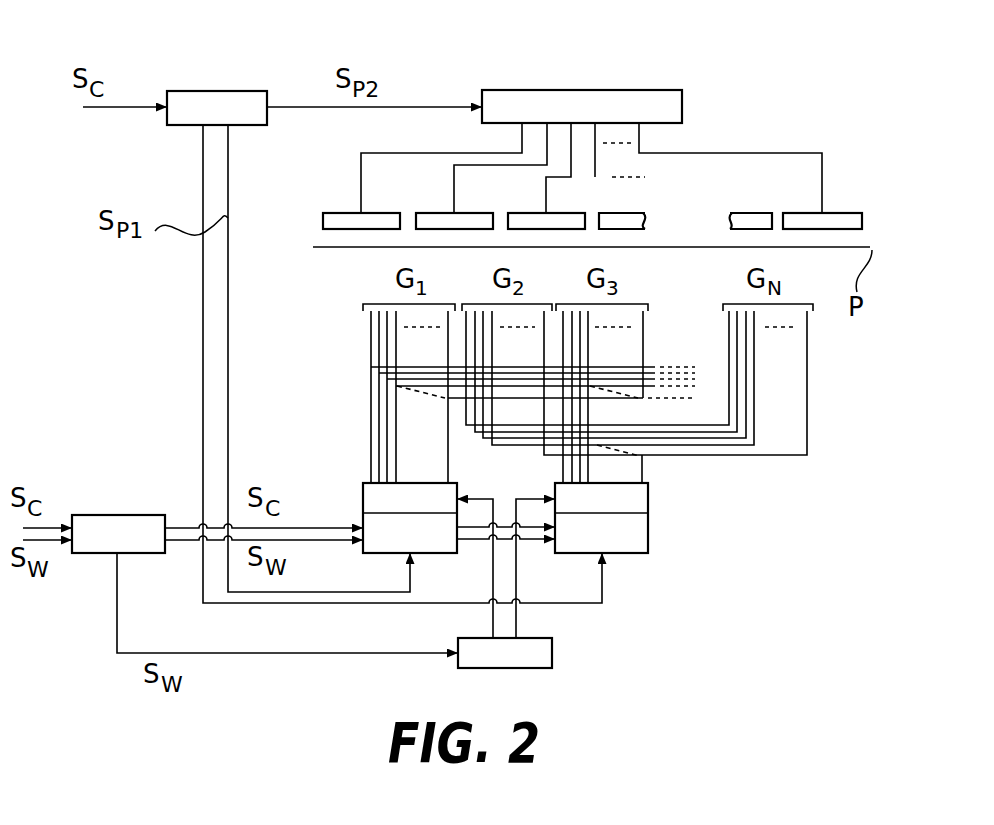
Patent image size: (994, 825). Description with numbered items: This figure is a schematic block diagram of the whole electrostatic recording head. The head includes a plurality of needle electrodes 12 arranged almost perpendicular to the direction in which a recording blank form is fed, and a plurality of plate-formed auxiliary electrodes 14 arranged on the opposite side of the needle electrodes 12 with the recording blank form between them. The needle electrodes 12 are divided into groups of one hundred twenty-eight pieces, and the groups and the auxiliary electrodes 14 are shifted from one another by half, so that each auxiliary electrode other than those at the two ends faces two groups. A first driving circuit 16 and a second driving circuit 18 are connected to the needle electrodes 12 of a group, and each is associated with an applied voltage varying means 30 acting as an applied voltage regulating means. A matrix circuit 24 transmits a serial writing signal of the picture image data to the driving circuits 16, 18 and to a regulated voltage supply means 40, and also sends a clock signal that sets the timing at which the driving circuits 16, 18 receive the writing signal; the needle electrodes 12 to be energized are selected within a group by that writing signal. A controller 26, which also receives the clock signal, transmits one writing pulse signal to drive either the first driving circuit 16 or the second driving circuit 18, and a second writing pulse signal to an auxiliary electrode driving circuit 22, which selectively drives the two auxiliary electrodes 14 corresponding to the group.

The needle electrodes 12 is at (370, 344).
The plate-formed auxiliary electrodes 14 is at (868, 180).
The first driving circuit 16 is at (433, 535).
The second driving circuit 18 is at (617, 535).
The auxiliary electrode driving circuit 22 is at (583, 96).
The matrix circuit 24 is at (120, 519).
The controller 26 is at (215, 94).
The applied voltage varying means 30 is at (503, 529).
The regulated voltage supply means 40 is at (530, 651).